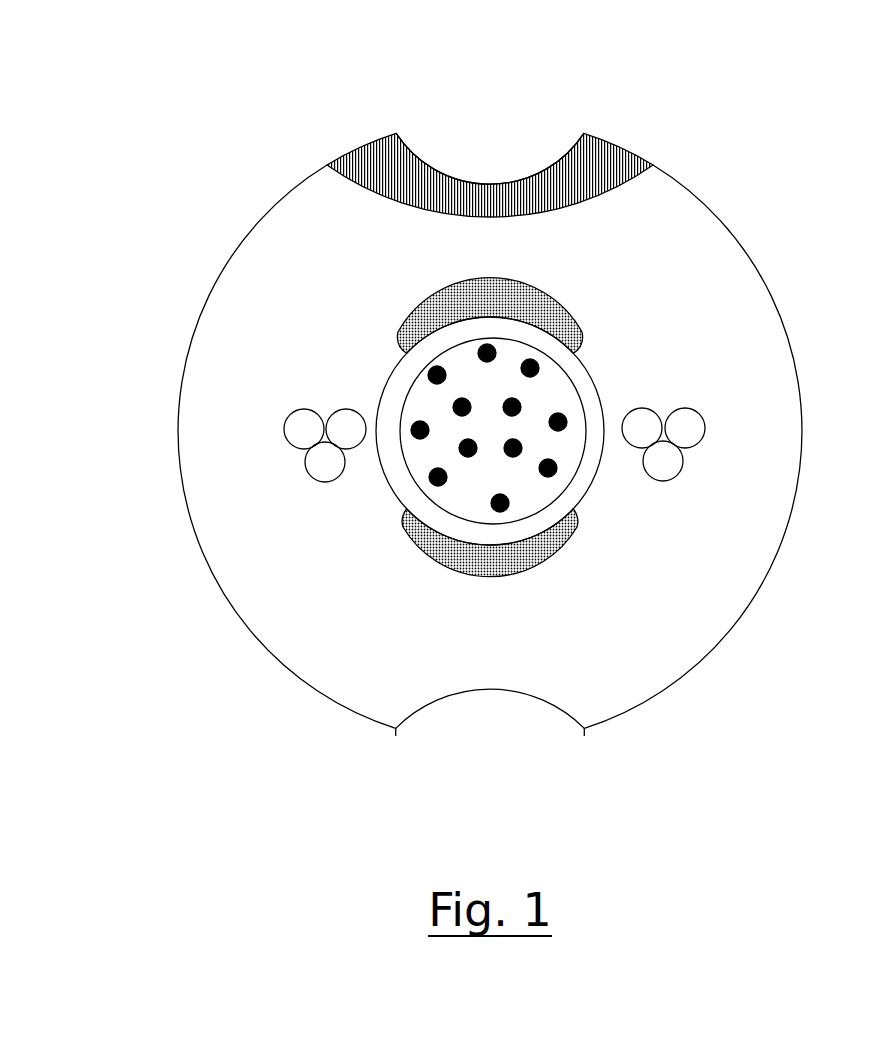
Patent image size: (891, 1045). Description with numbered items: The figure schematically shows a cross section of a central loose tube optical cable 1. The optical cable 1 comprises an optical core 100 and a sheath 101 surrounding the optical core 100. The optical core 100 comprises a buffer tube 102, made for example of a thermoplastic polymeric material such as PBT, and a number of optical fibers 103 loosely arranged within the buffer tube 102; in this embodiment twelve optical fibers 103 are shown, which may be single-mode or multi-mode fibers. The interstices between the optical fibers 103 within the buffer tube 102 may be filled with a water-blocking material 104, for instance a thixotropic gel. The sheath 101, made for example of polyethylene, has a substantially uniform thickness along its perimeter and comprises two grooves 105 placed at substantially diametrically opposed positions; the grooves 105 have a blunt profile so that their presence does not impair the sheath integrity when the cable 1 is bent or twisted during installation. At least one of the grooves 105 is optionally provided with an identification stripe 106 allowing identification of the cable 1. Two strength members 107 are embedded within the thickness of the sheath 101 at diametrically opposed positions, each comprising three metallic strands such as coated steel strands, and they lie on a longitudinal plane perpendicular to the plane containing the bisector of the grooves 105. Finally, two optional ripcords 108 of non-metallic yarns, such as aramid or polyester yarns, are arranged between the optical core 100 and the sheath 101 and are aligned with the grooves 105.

The optical cable 1 is at (78, 127).
The optical core 100 is at (471, 439).
The sheath 101 is at (712, 205).
The buffer tube 102 is at (592, 372).
The optical fibers 103 is at (436, 478).
The water-blocking material 104 is at (460, 497).
The grooves 105 is at (467, 182).
The identification stripe 106 is at (624, 145).
The strength members 107 is at (275, 398).
The ripcords 108 is at (430, 292).